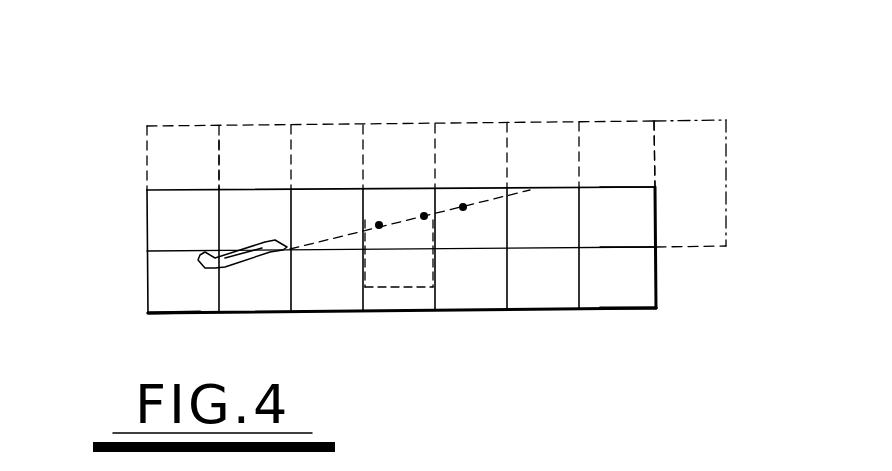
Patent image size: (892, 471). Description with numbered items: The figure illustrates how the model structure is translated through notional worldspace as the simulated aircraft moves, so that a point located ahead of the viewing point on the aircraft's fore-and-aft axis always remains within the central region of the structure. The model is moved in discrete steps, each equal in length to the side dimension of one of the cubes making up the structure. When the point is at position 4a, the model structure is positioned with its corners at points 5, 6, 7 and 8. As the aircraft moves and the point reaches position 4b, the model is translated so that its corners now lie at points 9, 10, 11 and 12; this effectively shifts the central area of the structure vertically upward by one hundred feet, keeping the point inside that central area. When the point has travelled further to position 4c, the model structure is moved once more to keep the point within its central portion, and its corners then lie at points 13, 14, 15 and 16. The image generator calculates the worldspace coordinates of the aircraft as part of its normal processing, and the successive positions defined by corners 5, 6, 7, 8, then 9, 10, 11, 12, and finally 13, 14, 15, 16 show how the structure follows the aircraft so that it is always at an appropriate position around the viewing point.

The first position of point 4a is at (379, 225).
The second position of point 4b is at (424, 216).
The third position of point 4c is at (463, 207).
The first corner point 5 is at (147, 190).
The second corner point 6 is at (656, 187).
The third corner point 7 is at (656, 309).
The fourth corner point 8 is at (148, 313).
The corner point of moved model 9 is at (146, 124).
The corner point of moved model 10 is at (655, 121).
The corner point of moved model 11 is at (656, 247).
The corner point of moved model 12 is at (147, 252).
The corner point of further moved model 13 is at (219, 145).
The corner point of further moved model 14 is at (726, 121).
The corner point of further moved model 15 is at (727, 240).
The corner point of further moved model 16 is at (220, 223).